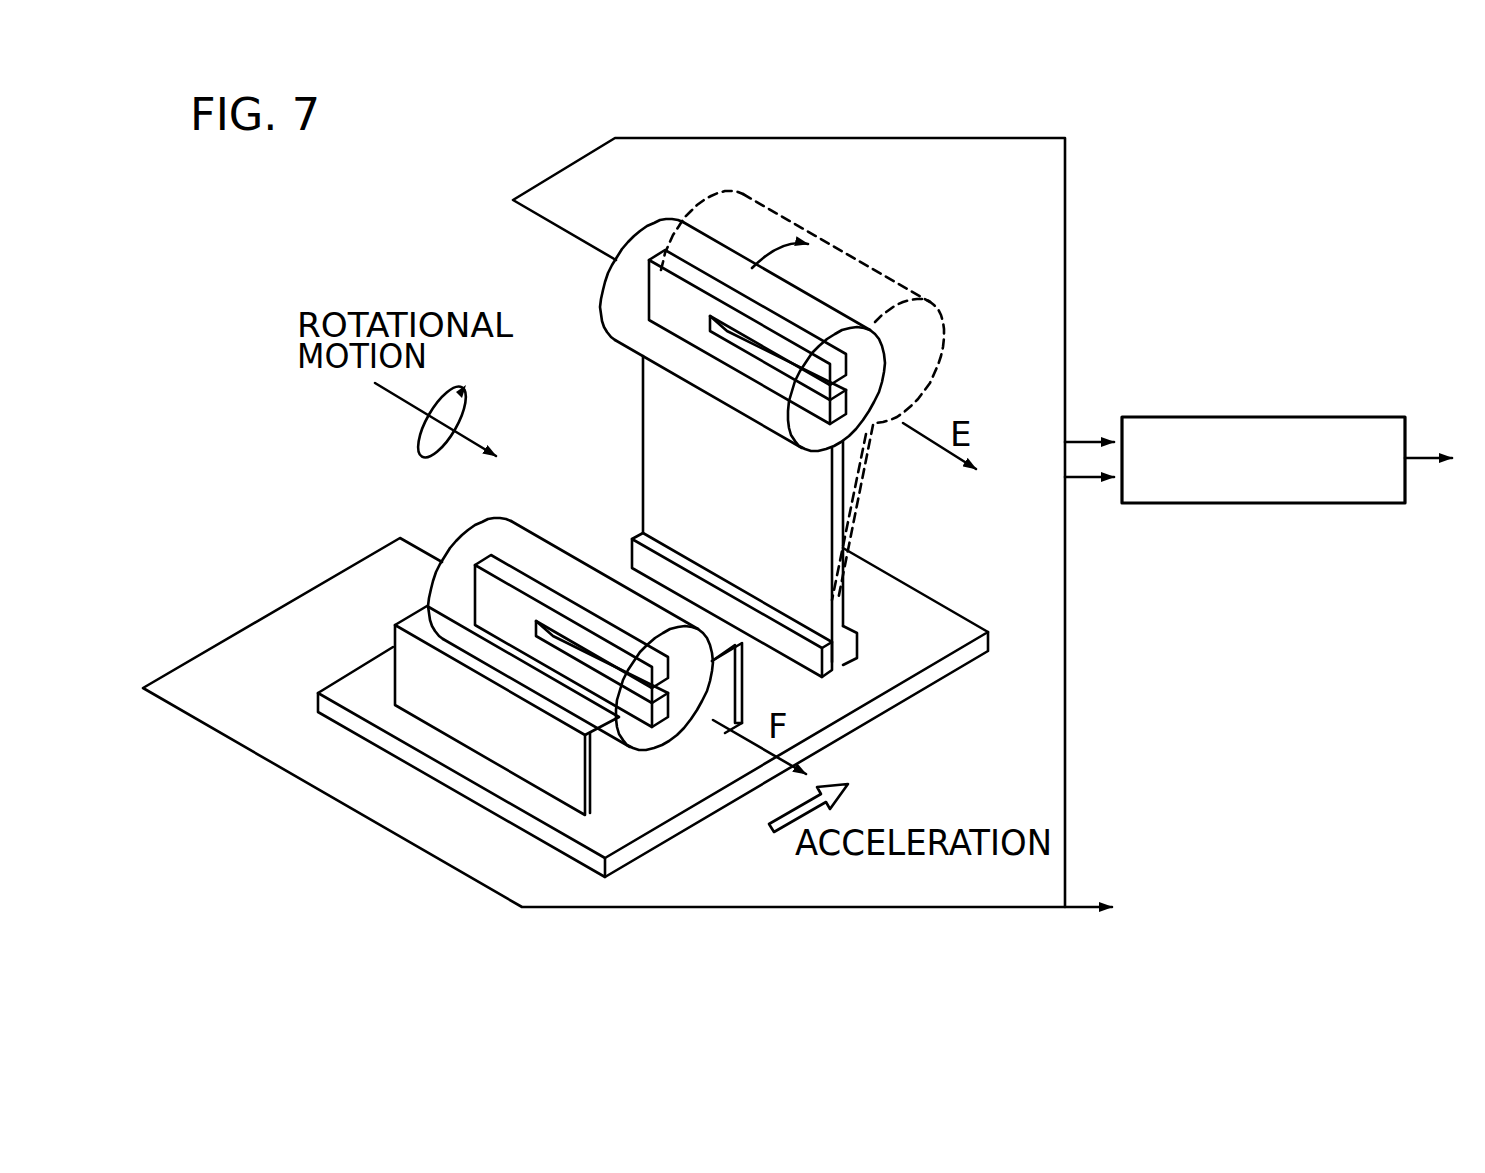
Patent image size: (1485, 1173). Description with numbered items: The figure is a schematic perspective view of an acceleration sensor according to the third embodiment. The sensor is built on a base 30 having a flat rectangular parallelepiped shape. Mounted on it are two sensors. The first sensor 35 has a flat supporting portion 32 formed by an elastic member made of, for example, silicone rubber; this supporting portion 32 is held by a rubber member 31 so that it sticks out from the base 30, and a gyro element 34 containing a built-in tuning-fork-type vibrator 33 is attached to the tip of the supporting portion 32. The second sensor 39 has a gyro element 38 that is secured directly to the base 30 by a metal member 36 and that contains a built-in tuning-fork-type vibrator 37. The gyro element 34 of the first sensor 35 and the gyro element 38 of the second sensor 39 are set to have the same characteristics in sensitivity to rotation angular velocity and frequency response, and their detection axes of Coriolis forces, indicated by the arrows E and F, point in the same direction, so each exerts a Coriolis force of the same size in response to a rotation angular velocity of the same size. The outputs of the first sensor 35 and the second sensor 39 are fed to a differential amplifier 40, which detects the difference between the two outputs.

The base 30 is at (930, 617).
The rubber member 31 is at (857, 648).
The supporting portion 32 is at (660, 422).
The tuning-fork-type vibrator 33 is at (660, 298).
The gyro element 34 is at (613, 278).
The first sensor 35 is at (878, 482).
The metal member 36 is at (746, 689).
The tuning-fork-type vibrator 37 is at (482, 595).
The gyro element 38 is at (467, 540).
The second sensor 39 is at (539, 596).
The differential amplifier 40 is at (1271, 417).